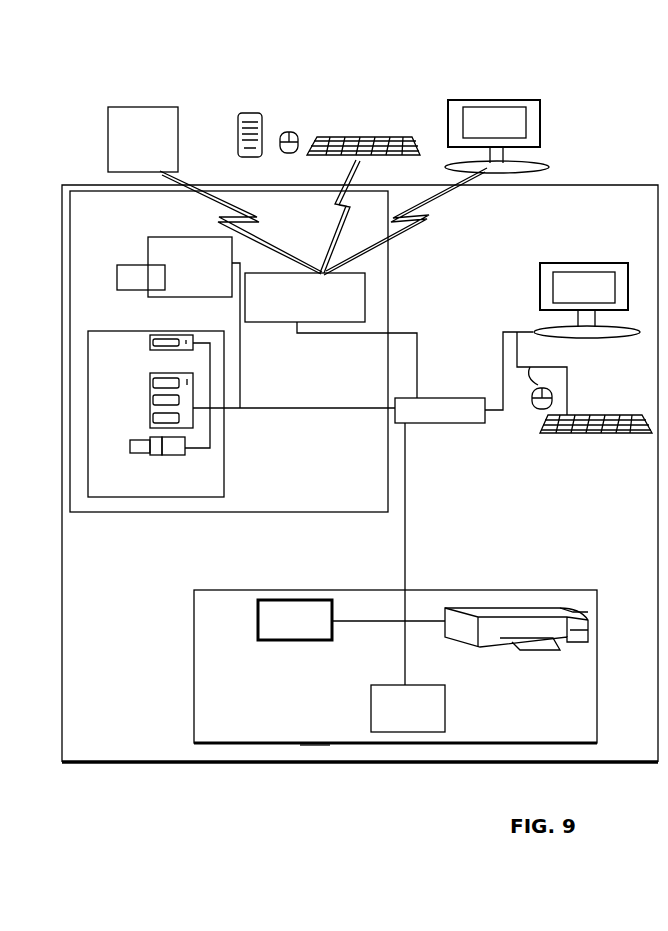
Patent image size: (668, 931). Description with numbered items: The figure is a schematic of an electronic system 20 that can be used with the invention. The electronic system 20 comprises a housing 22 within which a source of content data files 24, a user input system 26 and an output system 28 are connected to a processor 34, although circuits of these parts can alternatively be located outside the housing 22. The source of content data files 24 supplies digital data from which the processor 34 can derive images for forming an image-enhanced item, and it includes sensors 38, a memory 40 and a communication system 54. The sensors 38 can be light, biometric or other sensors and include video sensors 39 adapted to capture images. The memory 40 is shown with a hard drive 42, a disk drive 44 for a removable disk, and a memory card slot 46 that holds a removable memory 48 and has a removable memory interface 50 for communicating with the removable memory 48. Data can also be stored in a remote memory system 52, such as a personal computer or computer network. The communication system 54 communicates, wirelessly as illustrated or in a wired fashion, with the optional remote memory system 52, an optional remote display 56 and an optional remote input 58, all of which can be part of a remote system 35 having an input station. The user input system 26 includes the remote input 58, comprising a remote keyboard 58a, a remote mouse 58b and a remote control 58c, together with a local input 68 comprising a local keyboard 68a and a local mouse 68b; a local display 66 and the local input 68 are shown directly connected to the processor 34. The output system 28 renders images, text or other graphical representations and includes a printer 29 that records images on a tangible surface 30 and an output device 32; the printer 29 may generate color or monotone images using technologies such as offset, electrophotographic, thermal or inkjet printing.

The electronic system 20 is at (178, 772).
The housing 22 is at (312, 753).
The source of content data files 24 is at (95, 512).
The user input system 26 is at (603, 161).
The output system 28 is at (194, 668).
The printer 29 is at (457, 640).
The tangible surface 30 is at (258, 620).
The output device 32 is at (371, 704).
The processor 34 is at (459, 398).
The remote system 35 is at (541, 96).
The sensors 38 is at (157, 237).
The video sensors 39 is at (128, 265).
The memory 40 is at (95, 331).
The hard drive 42 is at (150, 400).
The disk drive 44 is at (150, 343).
The memory card slot 46 is at (179, 455).
The removable memory 48 is at (136, 454).
The removable memory interface 50 is at (156, 455).
The remote memory system 52 is at (147, 107).
The communication system 54 is at (253, 322).
The remote display 56 is at (498, 100).
The remote input 58 is at (397, 126).
The remote keyboard 58a is at (360, 137).
The remote mouse 58b is at (287, 132).
The remote control 58c is at (250, 113).
The local display 66 is at (608, 263).
The local input 68 is at (617, 411).
The local keyboard 68a is at (590, 415).
The local mouse 68b is at (533, 408).